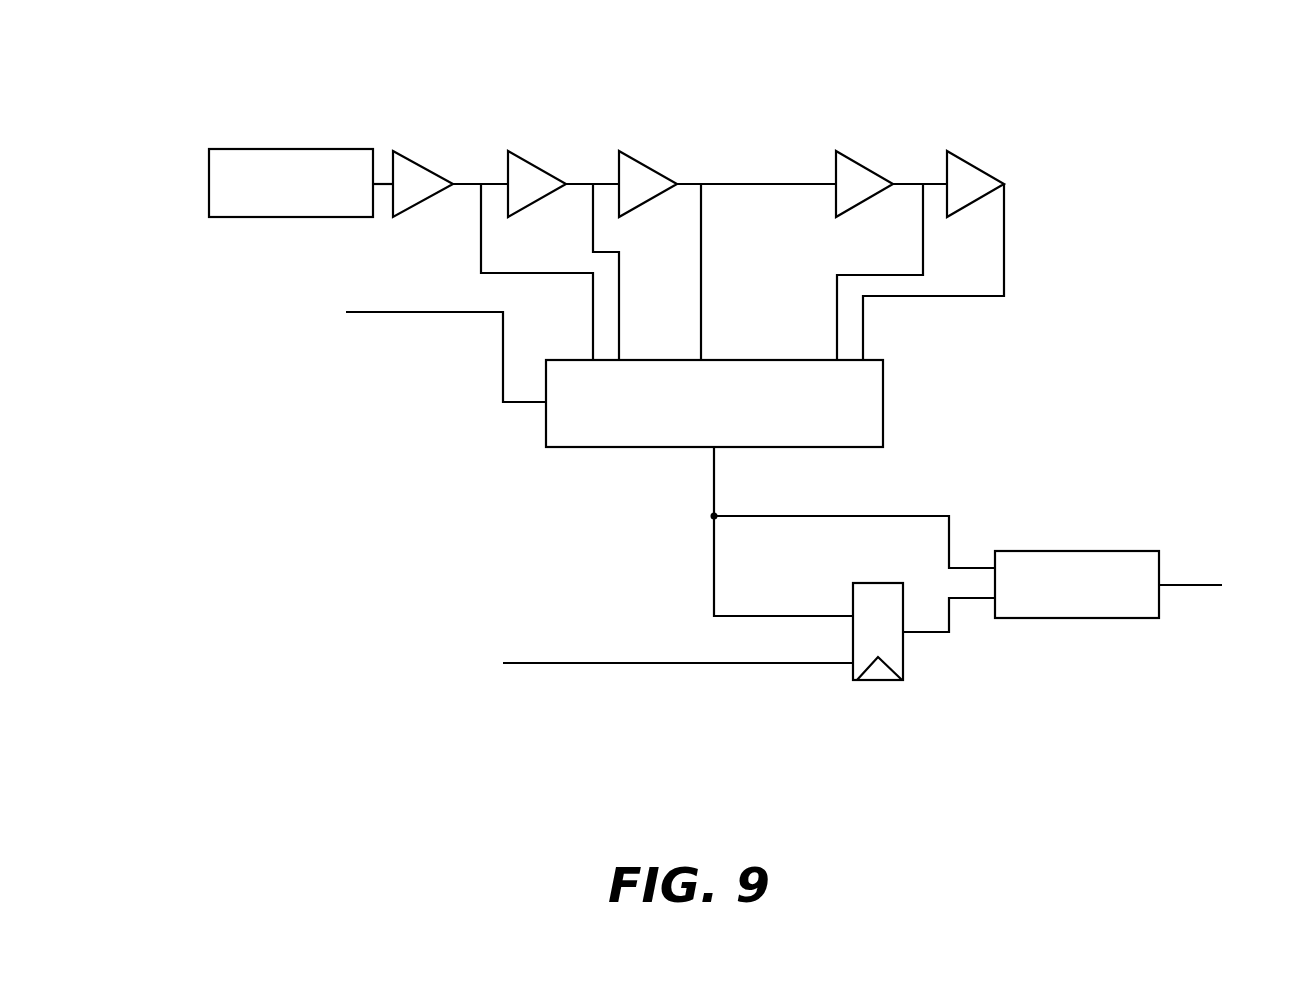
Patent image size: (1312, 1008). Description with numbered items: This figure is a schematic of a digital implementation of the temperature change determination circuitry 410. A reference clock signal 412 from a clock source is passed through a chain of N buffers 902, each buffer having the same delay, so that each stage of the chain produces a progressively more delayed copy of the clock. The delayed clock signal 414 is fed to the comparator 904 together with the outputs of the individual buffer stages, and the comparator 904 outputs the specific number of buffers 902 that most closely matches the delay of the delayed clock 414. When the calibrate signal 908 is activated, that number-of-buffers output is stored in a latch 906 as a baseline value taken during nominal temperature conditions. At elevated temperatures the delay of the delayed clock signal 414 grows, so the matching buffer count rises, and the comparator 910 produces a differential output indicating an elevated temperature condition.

The temperature change determination circuitry 410 is at (181, 96).
The reference clock signal 412 is at (386, 180).
The buffers 902 is at (428, 178).
The comparator 904 is at (875, 428).
The delayed clock signal 414 is at (393, 318).
The register 906 is at (872, 672).
The calibrate signal 908 is at (750, 665).
The comparator 910 is at (1148, 560).